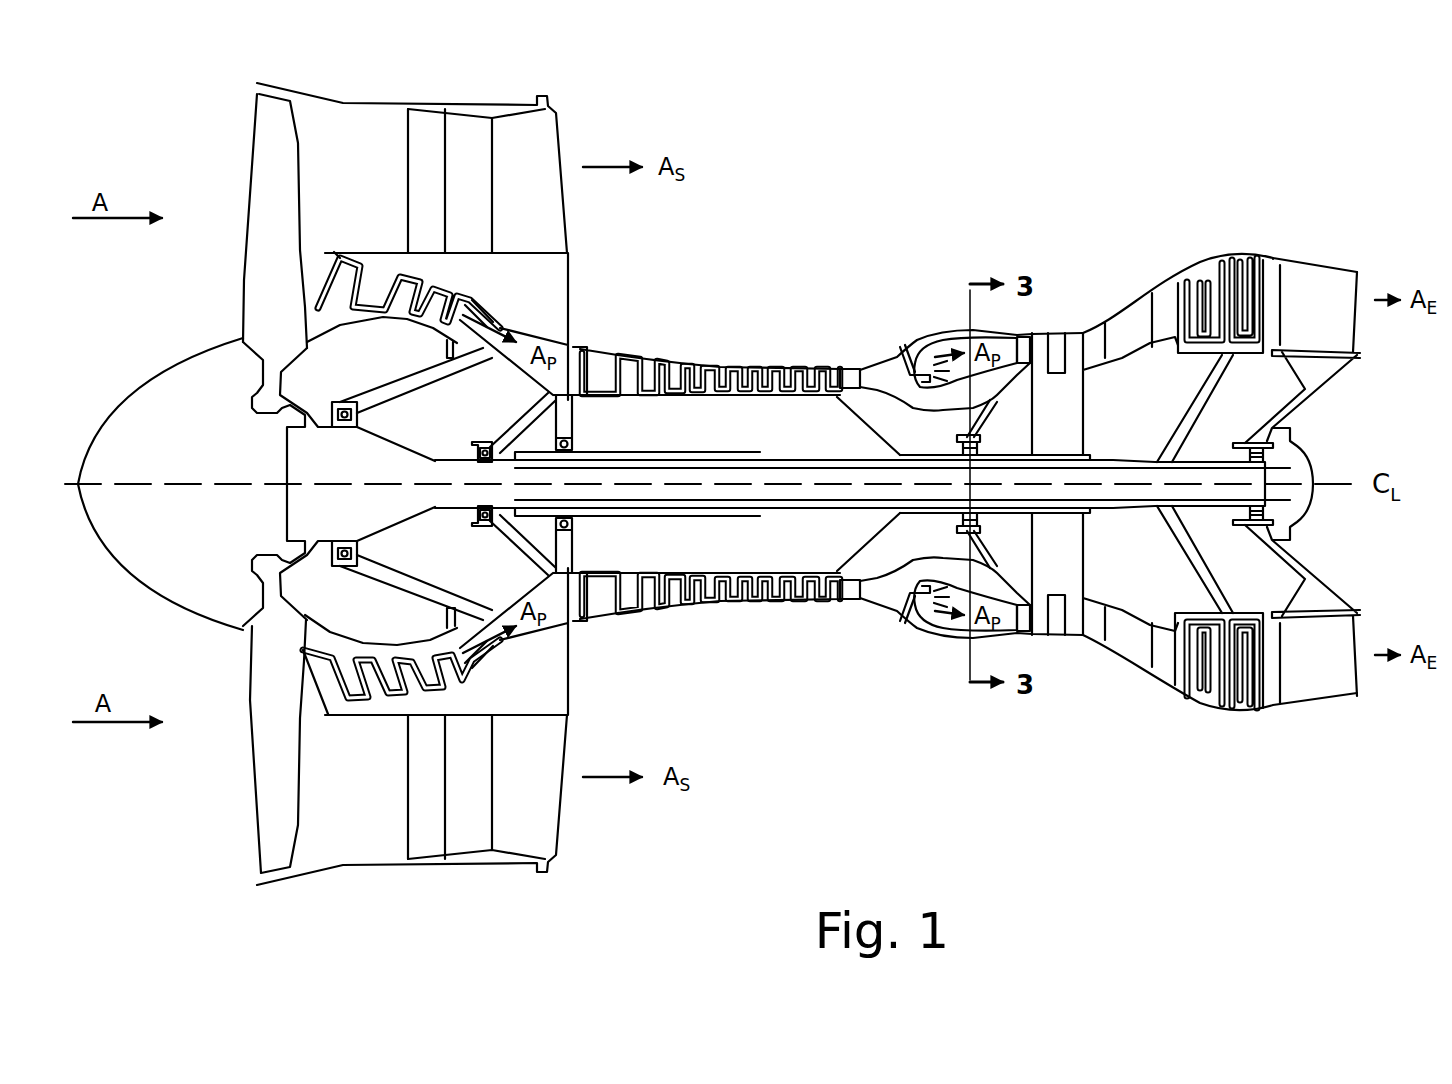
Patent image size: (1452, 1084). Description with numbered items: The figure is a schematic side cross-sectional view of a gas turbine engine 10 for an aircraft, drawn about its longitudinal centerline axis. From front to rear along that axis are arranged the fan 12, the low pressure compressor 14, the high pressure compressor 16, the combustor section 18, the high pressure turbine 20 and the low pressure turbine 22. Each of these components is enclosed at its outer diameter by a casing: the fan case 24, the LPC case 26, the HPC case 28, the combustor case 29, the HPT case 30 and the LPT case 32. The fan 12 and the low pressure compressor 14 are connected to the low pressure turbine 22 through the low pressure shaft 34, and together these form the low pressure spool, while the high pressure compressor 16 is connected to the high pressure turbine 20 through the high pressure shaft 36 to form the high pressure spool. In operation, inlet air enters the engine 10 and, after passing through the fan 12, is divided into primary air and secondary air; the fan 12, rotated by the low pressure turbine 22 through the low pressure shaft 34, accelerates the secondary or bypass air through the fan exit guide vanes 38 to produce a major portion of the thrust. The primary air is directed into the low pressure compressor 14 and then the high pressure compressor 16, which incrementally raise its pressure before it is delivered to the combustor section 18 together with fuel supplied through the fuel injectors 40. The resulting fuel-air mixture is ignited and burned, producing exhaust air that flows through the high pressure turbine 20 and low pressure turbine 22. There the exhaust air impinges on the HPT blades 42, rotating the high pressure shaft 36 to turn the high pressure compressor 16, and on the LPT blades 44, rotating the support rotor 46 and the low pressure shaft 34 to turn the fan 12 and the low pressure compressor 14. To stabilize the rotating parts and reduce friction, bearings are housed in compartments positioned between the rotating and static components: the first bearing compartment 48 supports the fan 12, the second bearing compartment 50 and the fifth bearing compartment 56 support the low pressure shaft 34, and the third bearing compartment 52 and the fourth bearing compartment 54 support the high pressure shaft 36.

The gas turbine engine 10 is at (1118, 168).
The fan 12 is at (245, 788).
The low pressure compressor 14 is at (396, 716).
The high pressure compressor 16 is at (766, 622).
The combustor section 18 is at (955, 328).
The high pressure turbine 20 is at (1046, 660).
The low pressure turbine 22 is at (1184, 714).
The fan case 24 is at (373, 104).
The LPC case 26 is at (380, 263).
The HPC case 28 is at (740, 365).
The combustor case 29 is at (957, 628).
The HPT case 30 is at (1093, 325).
The LPT case 32 is at (1265, 260).
The low pressure shaft 34 is at (818, 476).
The high pressure shaft 36 is at (886, 582).
The fan exit guide vanes 38 is at (482, 207).
The fuel injectors 40 is at (914, 347).
The HPT blades 42 is at (1076, 632).
The LPT blades 44 is at (1183, 310).
The support rotor 46 is at (1190, 407).
The first bearing compartment 48 is at (1130, 328).
The second bearing compartment 50 is at (485, 528).
The third bearing compartment 52 is at (587, 443).
The fourth bearing compartment 54 is at (957, 443).
The fifth bearing compartment 56 is at (1250, 452).